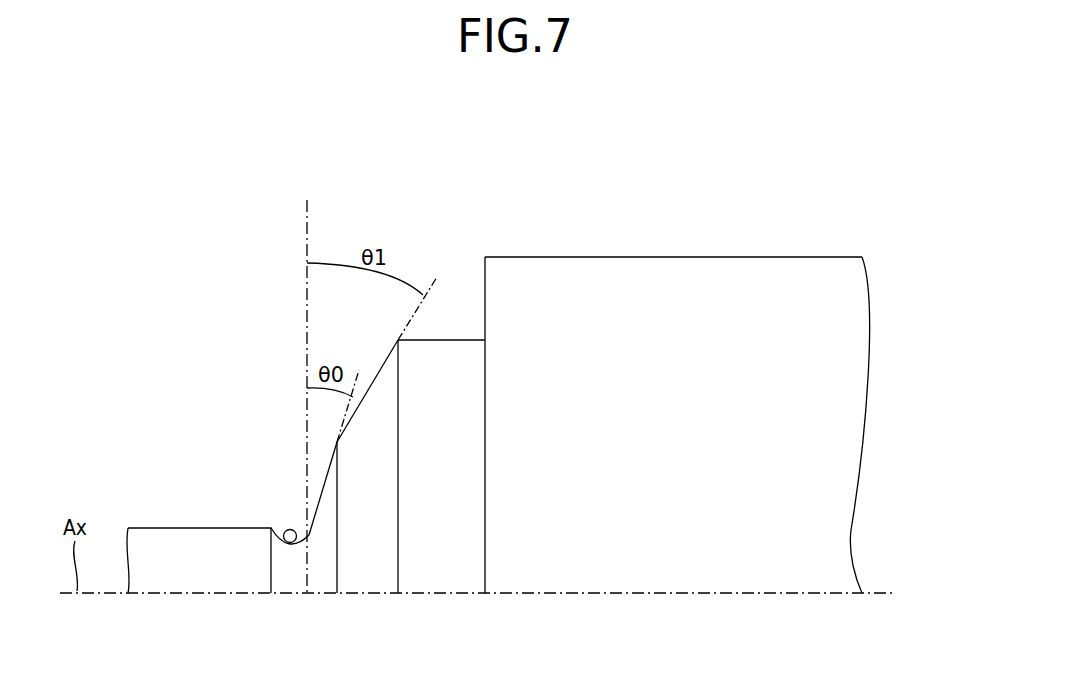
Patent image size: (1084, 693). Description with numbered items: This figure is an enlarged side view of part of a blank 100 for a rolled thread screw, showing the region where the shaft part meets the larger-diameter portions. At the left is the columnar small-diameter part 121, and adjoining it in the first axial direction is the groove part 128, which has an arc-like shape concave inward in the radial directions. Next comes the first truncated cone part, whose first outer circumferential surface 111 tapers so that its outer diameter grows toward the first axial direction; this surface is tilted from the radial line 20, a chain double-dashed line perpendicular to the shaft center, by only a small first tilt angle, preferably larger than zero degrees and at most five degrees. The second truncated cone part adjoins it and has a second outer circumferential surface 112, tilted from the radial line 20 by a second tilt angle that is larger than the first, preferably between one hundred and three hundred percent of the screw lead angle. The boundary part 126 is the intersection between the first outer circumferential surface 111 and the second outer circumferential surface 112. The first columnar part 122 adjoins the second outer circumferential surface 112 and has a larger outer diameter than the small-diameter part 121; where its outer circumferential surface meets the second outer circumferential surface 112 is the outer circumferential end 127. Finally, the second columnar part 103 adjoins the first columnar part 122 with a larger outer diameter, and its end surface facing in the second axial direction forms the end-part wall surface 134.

The radial line 20 is at (305, 222).
The blank 100 is at (794, 253).
The second columnar part 103 is at (673, 256).
The end-part wall surface 134 is at (484, 279).
The first columnar part 122 is at (455, 339).
The outer circumferential end 127 is at (398, 338).
The second outer circumferential surface 112 is at (380, 362).
The boundary part 126 is at (336, 442).
The first outer circumferential surface 111 is at (318, 505).
The small-diameter part 121 is at (150, 527).
The groove part 128 is at (296, 543).